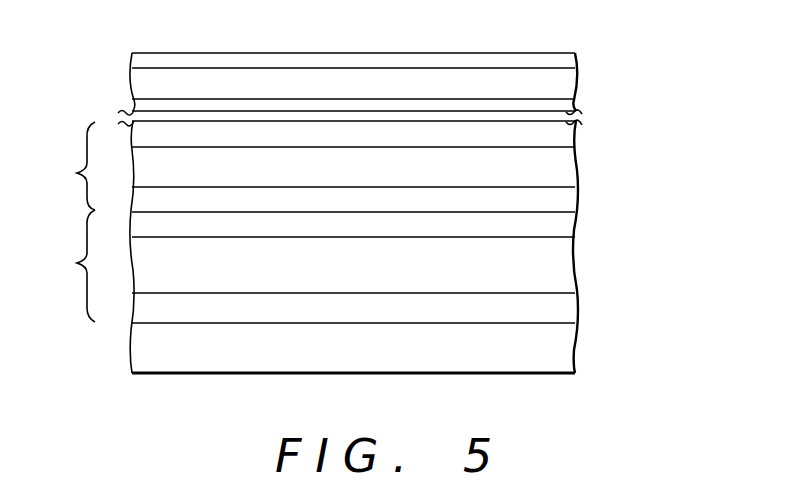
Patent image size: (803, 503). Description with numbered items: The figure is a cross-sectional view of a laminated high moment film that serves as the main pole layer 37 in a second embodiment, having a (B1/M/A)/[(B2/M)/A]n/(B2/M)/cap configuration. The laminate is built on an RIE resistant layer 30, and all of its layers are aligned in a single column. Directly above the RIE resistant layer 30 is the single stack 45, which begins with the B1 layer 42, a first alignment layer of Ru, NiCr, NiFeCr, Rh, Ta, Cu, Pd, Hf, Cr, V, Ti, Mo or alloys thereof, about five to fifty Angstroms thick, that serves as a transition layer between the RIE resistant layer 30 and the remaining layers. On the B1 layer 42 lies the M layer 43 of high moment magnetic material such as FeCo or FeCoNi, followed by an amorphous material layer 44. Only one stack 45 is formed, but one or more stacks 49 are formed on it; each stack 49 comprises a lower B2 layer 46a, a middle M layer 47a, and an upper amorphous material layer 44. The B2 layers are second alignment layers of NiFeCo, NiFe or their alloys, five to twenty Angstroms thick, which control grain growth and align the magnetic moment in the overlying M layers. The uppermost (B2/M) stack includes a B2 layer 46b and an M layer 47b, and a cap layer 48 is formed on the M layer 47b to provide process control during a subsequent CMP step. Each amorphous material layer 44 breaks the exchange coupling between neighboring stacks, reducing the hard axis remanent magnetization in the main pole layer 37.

The main pole layer 37 is at (90, 53).
The cap layer 48 is at (555, 59).
The M layer 47b is at (555, 79).
The B2 layer 46b is at (555, 106).
The amorphous material layer 44 is at (555, 134).
The M layer 47a is at (555, 164).
The B2 layer 46a is at (555, 194).
The M layer 43 is at (555, 264).
The B1 layer 42 is at (555, 304).
The RIE resistant layer 30 is at (555, 349).
The stack 49 is at (63, 166).
The stack 45 is at (63, 266).